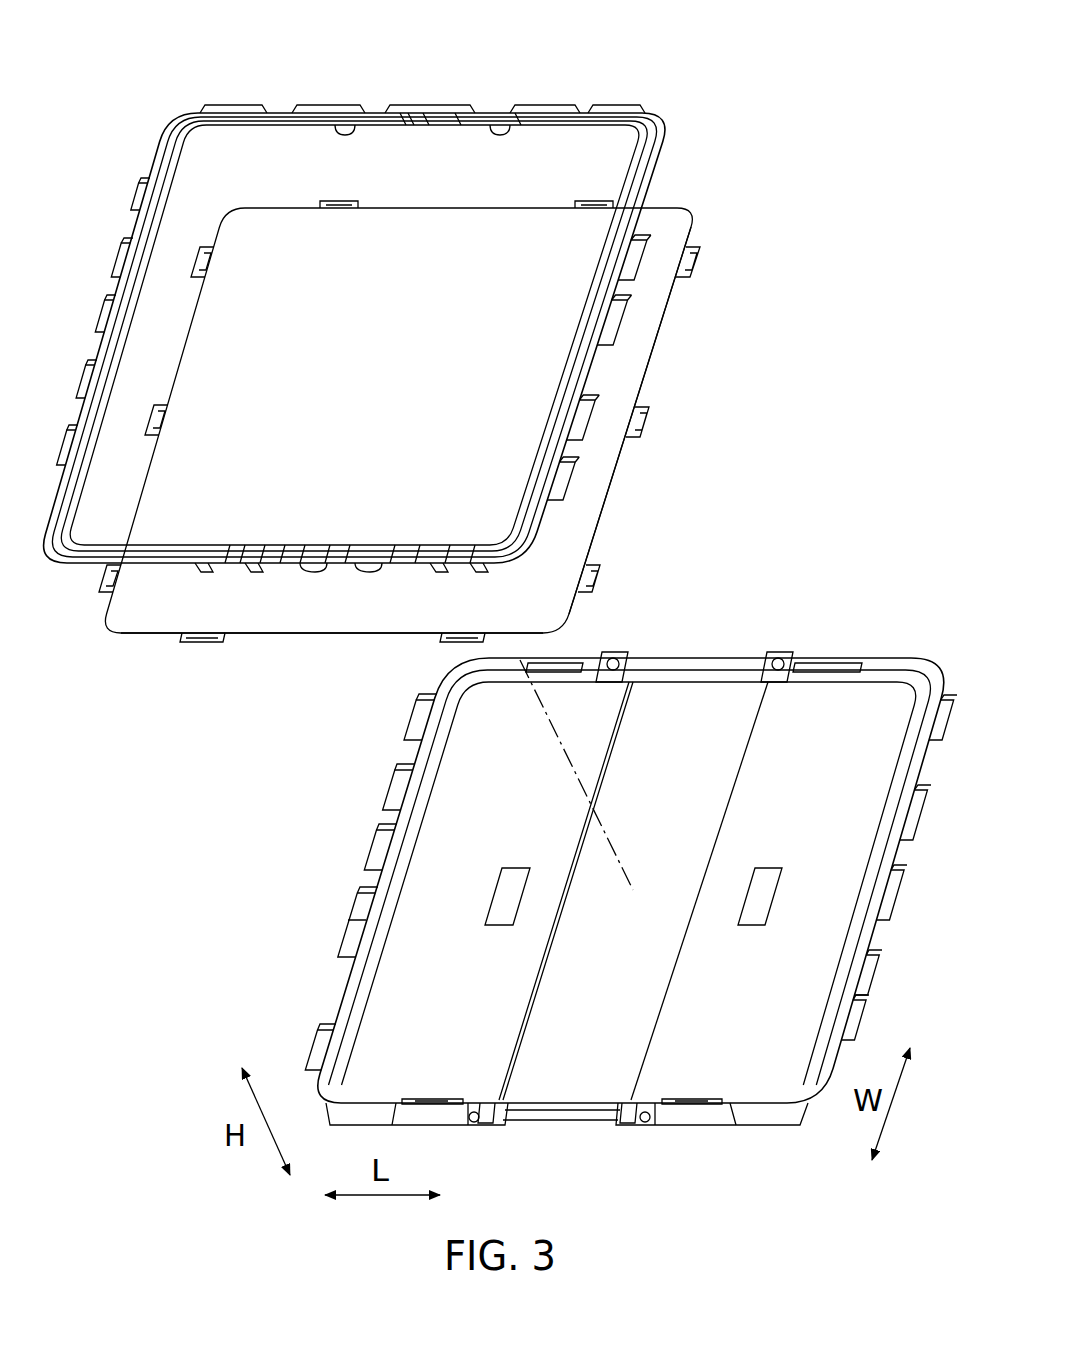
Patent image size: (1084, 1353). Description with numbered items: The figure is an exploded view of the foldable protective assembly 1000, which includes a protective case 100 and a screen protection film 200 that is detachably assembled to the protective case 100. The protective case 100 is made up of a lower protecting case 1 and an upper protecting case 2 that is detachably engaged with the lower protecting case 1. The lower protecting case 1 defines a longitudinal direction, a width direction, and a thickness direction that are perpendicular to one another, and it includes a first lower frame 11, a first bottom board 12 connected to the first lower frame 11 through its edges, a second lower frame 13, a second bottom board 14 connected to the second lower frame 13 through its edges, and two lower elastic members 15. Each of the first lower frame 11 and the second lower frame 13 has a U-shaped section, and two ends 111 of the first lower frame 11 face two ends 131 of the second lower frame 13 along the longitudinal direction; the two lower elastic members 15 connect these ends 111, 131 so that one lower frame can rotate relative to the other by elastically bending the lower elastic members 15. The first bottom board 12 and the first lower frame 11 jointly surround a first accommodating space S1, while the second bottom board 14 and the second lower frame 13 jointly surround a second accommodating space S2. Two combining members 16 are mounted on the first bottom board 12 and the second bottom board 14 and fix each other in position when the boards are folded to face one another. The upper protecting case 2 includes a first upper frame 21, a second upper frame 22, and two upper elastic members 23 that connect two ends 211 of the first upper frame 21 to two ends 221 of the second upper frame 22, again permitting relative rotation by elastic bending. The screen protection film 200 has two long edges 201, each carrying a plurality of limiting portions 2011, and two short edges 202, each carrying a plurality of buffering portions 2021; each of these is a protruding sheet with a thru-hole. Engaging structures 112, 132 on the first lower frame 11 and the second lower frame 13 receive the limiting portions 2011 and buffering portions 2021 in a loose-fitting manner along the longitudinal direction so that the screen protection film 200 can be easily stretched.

The foldable protective assembly 1000 is at (856, 73).
The protective case 100 is at (905, 138).
The lower protecting case 1 is at (876, 656).
The first lower frame 11 is at (398, 837).
The first bottom board 12 is at (407, 983).
The second lower frame 13 is at (850, 1010).
The second bottom board 14 is at (845, 869).
The lower elastic member 15 is at (716, 662).
The combining member 16 is at (512, 872).
The end of the first lower frame 111 is at (488, 1124).
The engaging structure 112 is at (337, 1044).
The end of the second lower frame 131 is at (631, 1124).
The engaging structure 132 is at (862, 974).
The first accommodating space S1 is at (458, 781).
The second accommodating space S2 is at (865, 773).
The upper protecting case 2 is at (654, 98).
The first upper frame 21 is at (152, 182).
The second upper frame 22 is at (660, 177).
The upper elastic member 23 is at (403, 106).
The end of the first upper frame 211 is at (305, 115).
The end of the second upper frame 221 is at (515, 122).
The screen protection film 200 is at (645, 376).
The long edge 201 is at (300, 646).
The short edge 202 is at (620, 485).
The limiting portion 2011 is at (209, 644).
The buffering portion 2021 is at (600, 577).